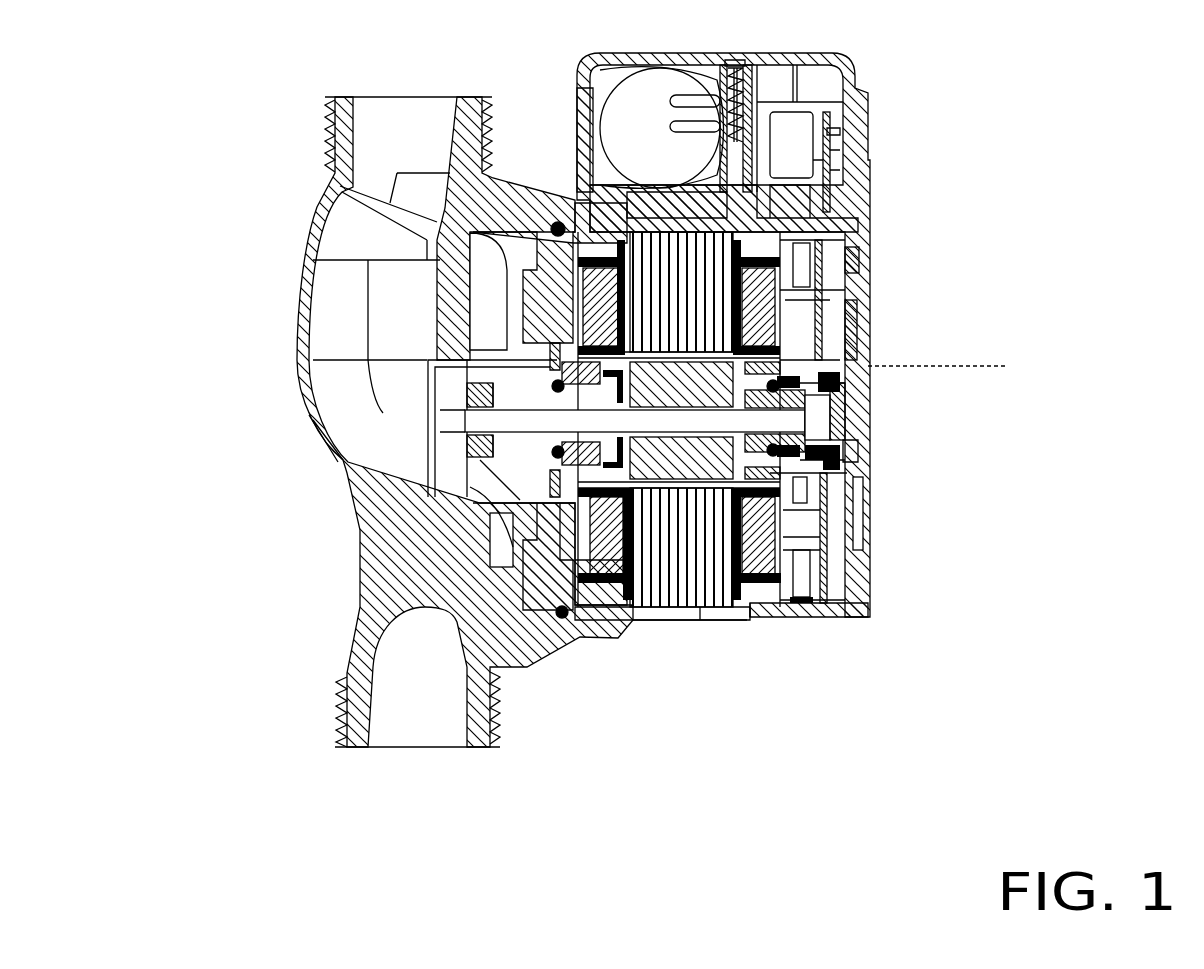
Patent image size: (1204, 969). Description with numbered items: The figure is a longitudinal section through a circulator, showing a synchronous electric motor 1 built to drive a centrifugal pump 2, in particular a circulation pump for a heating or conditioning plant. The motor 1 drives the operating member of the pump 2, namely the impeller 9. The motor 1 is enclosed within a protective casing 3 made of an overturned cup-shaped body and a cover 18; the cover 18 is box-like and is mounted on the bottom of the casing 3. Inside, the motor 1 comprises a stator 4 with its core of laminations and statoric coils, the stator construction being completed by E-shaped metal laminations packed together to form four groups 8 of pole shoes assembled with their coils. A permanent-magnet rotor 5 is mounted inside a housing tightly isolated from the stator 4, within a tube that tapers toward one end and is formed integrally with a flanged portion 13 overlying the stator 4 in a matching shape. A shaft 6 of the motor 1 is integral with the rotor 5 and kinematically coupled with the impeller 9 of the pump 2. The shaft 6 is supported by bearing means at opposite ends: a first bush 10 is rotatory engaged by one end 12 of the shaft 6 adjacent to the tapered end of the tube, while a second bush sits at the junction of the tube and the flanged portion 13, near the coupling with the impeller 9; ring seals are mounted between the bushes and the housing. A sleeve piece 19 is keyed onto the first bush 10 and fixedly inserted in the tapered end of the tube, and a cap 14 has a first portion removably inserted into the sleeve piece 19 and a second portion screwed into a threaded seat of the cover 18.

The synchronous electric motor 1 is at (575, 190).
The centrifugal pump 2 is at (312, 126).
The protective casing 3 is at (713, 617).
The stator 4 is at (606, 582).
The permanent-magnet rotor 5 is at (668, 360).
The shaft 6 is at (483, 418).
The groups of pole shoes 8 is at (686, 555).
The impeller 9 is at (452, 457).
The first bush 10 is at (778, 375).
The end of the shaft 12 is at (858, 440).
The flanged portion 13 is at (553, 452).
The cap 14 is at (860, 452).
The cover 18 is at (860, 605).
The sleeve piece 19 is at (832, 370).